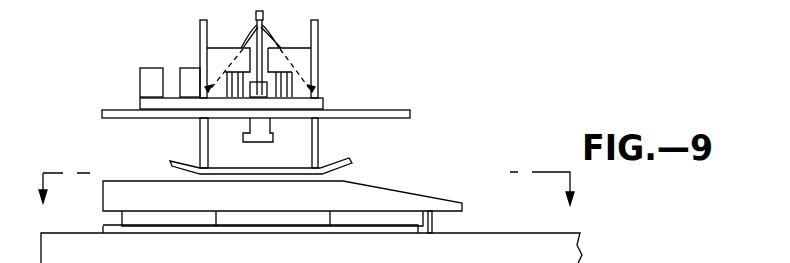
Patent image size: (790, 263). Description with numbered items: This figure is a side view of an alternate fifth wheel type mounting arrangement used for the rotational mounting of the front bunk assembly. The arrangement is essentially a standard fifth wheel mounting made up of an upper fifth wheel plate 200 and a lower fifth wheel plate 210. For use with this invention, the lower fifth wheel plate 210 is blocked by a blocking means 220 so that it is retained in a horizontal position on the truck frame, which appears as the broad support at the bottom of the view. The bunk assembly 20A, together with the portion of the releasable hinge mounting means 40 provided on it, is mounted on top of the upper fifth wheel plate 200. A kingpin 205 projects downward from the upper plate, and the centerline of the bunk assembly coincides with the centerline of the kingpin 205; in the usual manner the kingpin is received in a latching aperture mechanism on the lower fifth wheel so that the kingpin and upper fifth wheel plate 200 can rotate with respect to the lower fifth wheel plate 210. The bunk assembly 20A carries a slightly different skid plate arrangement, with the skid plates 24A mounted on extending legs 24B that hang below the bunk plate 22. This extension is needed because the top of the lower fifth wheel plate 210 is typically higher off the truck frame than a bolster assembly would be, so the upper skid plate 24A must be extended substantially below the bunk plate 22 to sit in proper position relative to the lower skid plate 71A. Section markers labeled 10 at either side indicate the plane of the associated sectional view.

The section line 10 is at (310, 201).
The bunk assembly 20A is at (277, 25).
The bunk plate 22 is at (308, 106).
The skid plates 24A is at (350, 159).
The extending legs 24B is at (318, 137).
The releasable hinge mounting means 40 is at (327, 52).
The lower skid plate 71A is at (402, 229).
The upper fifth wheel plate 200 is at (413, 112).
The kingpin 205 is at (250, 124).
The lower fifth wheel plate 210 is at (422, 203).
The blocking means 220 is at (432, 217).